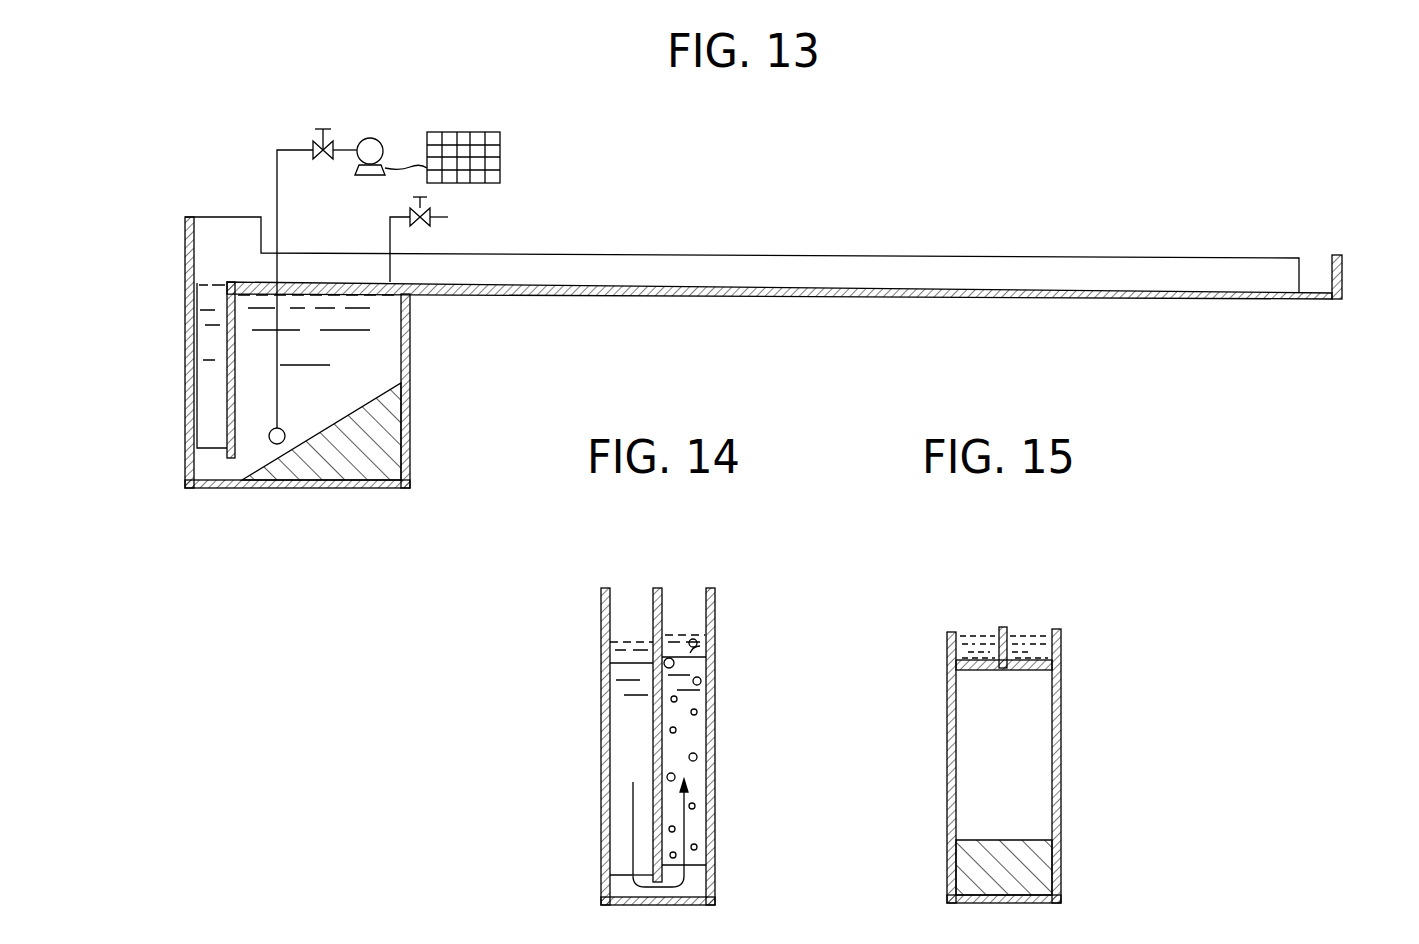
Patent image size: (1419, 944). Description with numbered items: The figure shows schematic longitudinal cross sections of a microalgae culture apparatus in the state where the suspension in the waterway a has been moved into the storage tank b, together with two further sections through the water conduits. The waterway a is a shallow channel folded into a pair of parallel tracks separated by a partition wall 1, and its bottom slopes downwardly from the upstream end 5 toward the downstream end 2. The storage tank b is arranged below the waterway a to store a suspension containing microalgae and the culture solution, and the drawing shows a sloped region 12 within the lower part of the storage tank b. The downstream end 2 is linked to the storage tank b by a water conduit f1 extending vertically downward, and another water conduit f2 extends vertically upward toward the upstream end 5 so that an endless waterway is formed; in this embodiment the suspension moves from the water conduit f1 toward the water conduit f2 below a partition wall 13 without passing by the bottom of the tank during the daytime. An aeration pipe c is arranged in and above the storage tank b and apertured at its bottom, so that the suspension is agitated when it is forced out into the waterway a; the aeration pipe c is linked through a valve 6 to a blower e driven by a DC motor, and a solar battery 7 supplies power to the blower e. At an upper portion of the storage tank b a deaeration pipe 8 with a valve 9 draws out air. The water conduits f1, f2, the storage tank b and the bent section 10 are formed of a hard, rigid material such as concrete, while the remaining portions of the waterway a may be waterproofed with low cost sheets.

In FIG. 13, the partition wall 1 is at (1025, 265).
In FIG. 14, the partition wall 1 is at (657, 588).
In FIG. 15, the partition wall 1 is at (1003, 627).
In FIG. 14, the downstream end 2 is at (627, 655).
In FIG. 14, the upstream end 5 is at (705, 645).
In FIG. 13, the valve 6 is at (327, 140).
In FIG. 13, the solar battery 7 is at (485, 132).
In FIG. 13, the deaeration pipe 8 is at (390, 233).
In FIG. 13, the valve 9 is at (440, 227).
In FIG. 13, the bent section 10 is at (1342, 257).
In FIG. 13, the sloped bottom 12 is at (330, 429).
In FIG. 13, the partition wall 13 is at (207, 428).
In FIG. 14, the partition wall 13 is at (653, 870).
In FIG. 13, the waterway a is at (795, 300).
In FIG. 13, the storage tank b is at (365, 362).
In FIG. 15, the storage tank b is at (1005, 758).
In FIG. 13, the aeration pipe c is at (277, 170).
In FIG. 13, the blower e is at (383, 140).
In FIG. 14, the water conduit f1 is at (625, 732).
In FIG. 13, the water conduit f2 is at (194, 412).
In FIG. 14, the water conduit f2 is at (690, 733).